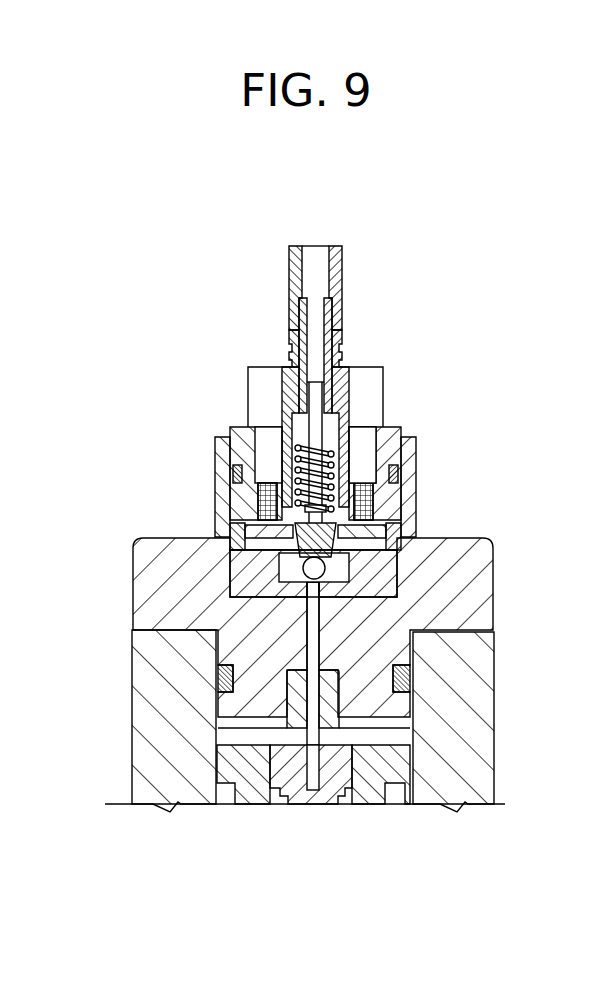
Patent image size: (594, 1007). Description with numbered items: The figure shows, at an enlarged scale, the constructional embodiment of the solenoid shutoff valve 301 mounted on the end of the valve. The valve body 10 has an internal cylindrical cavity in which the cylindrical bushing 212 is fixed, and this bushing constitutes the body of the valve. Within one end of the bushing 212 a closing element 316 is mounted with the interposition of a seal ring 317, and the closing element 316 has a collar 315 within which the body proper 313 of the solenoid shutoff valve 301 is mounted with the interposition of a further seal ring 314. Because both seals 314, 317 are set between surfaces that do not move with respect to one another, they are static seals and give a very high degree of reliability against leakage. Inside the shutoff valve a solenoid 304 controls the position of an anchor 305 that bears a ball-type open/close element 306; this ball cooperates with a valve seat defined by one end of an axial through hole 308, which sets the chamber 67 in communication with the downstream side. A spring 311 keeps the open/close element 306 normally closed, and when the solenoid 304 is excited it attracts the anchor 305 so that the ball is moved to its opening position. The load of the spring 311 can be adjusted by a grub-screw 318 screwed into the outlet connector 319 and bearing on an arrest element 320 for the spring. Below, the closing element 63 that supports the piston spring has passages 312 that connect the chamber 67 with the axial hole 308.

The solenoid shutoff valve 301 is at (212, 292).
The outlet connector 319 is at (343, 260).
The grub-screw 318 is at (343, 318).
The arrest element 320 is at (285, 380).
The spring 311 is at (283, 440).
The collar 315 is at (222, 458).
The seal ring 314 is at (400, 470).
The solenoid 304 is at (360, 483).
The anchor 305 is at (218, 537).
The body of the solenoid shutoff valve 313 is at (375, 570).
The ball-type open/close element 306 is at (303, 576).
The closing element 316 is at (457, 563).
The seal ring 317 is at (213, 677).
The valve body 10 is at (482, 668).
The axial through hole 308 is at (338, 688).
The chamber 67 is at (240, 730).
The closing element 63 is at (302, 784).
The passages 312 is at (330, 780).
The cylindrical bushing 212 is at (377, 793).